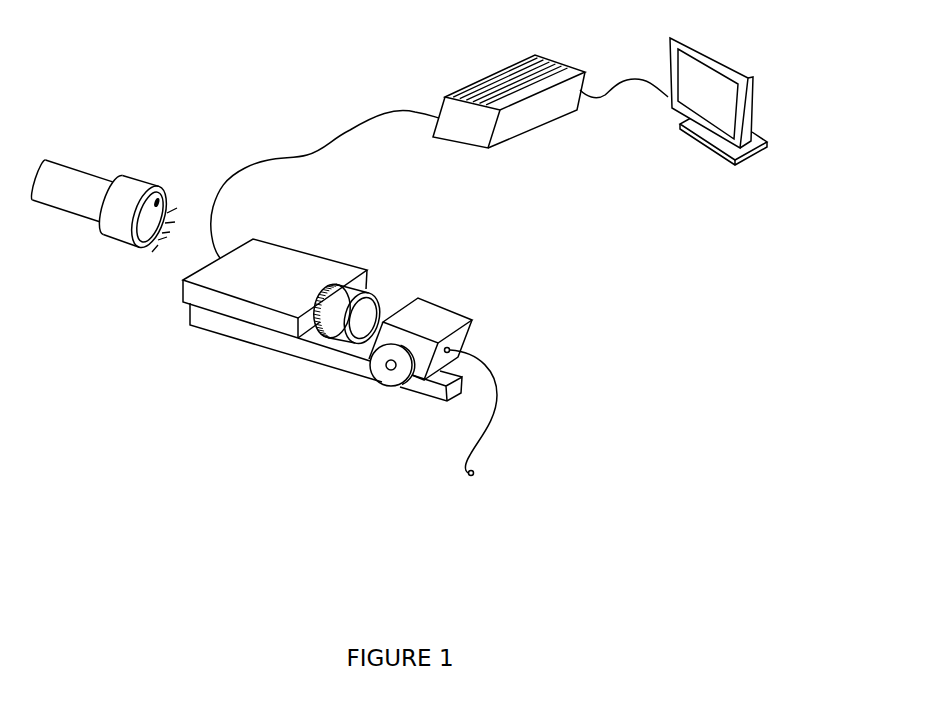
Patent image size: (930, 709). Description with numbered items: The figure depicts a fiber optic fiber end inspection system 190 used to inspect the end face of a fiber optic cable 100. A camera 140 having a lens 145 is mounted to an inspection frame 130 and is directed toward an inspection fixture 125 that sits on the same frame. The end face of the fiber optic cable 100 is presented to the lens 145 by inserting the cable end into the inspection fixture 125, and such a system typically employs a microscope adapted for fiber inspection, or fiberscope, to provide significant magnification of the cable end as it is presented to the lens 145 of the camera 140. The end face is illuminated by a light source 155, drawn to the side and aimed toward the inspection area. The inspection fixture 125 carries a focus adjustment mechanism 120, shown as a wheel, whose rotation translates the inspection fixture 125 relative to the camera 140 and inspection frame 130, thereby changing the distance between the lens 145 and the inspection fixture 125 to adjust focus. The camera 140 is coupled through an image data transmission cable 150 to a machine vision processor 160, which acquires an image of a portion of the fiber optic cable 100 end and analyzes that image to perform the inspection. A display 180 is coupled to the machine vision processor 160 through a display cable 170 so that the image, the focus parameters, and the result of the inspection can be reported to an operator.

The fiber optic cable 100 is at (497, 367).
The focus adjustment mechanism 120 is at (387, 382).
The inspection fixture 125 is at (440, 305).
The inspection frame 130 is at (420, 390).
The camera 140 is at (313, 255).
The lens 145 is at (372, 298).
The image data transmission cable 150 is at (307, 155).
The light source 155 is at (69, 167).
The machine vision processor 160 is at (553, 62).
The display cable 170 is at (621, 84).
The display 180 is at (753, 113).
The fiber optic fiber end inspection system 190 is at (704, 345).